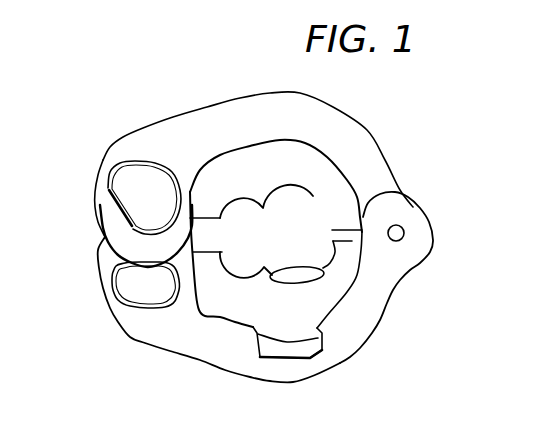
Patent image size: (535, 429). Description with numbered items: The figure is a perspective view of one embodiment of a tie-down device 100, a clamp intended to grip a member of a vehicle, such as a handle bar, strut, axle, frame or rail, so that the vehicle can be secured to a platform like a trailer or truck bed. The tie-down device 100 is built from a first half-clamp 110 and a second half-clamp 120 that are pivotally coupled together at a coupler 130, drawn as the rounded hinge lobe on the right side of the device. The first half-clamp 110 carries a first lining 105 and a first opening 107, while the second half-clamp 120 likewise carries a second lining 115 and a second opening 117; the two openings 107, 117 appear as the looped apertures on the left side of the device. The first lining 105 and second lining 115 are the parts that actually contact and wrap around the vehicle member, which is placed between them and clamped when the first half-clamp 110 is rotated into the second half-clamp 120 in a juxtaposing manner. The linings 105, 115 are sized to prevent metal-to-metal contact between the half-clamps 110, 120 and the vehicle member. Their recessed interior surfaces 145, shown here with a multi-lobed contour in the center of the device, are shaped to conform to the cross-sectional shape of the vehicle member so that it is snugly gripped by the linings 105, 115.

The tie-down device 100 is at (133, 88).
The first lining 105 is at (250, 163).
The first opening 107 is at (137, 188).
The first half-clamp 110 is at (360, 145).
The second lining 115 is at (257, 310).
The second opening 117 is at (130, 278).
The second half-clamp 120 is at (348, 352).
The coupler 130 is at (404, 232).
The recessed interior surfaces 145 is at (313, 196).